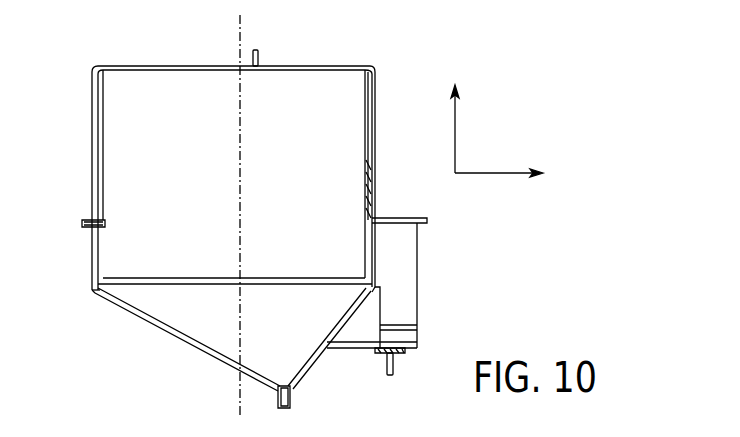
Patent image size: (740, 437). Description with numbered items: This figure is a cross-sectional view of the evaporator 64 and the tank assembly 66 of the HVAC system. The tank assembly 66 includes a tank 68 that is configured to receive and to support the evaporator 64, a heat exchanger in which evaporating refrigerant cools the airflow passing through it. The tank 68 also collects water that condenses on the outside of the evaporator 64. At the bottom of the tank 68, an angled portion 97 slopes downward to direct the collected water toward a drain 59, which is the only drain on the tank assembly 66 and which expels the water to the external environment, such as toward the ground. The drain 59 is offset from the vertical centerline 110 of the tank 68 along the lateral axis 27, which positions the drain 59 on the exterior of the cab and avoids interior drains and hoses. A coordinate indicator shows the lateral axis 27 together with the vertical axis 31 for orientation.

The evaporator 64 is at (180, 100).
The vertical centerline 110 is at (240, 218).
The tank 68 is at (93, 262).
The tank assembly 66 is at (132, 358).
The angled portion 97 is at (178, 340).
The drain 59 is at (290, 400).
The vertical axis 31 is at (455, 132).
The lateral axis 27 is at (495, 175).